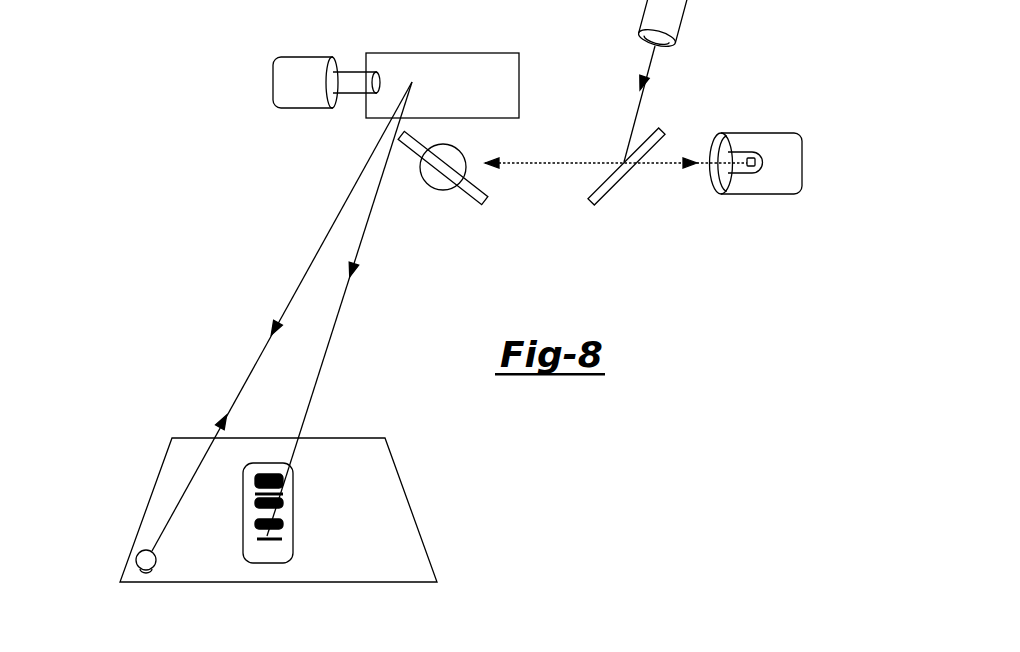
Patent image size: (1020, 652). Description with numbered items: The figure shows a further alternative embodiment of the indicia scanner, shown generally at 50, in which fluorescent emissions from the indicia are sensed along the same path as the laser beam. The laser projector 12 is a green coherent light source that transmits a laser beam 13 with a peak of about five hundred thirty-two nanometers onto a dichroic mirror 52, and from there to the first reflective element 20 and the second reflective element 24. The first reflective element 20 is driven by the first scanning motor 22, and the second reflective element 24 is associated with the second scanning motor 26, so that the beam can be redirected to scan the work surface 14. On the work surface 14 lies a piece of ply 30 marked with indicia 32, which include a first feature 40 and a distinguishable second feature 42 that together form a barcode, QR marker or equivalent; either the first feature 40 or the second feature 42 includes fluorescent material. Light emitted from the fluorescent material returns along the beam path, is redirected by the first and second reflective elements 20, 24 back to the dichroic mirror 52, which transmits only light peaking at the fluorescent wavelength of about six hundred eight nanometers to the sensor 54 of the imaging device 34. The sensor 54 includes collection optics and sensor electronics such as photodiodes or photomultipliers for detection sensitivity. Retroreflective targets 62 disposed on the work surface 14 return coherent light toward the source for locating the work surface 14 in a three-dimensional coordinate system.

The laser projector 12 is at (665, 25).
The laser beam 13 is at (545, 165).
The work surface 14 is at (347, 544).
The first reflective element 20 is at (452, 93).
The first scanning motor 22 is at (288, 108).
The second reflective element 24 is at (483, 203).
The second scanning motor 26 is at (430, 188).
The piece of ply 30 is at (266, 480).
The indicia 32 is at (268, 462).
The imaging device 34 is at (756, 130).
The first feature 40 is at (255, 523).
The second feature 42 is at (285, 532).
The alternative embodiment 50 is at (252, 50).
The dichroic mirror 52 is at (610, 203).
The sensor 54 is at (750, 157).
The retroreflective targets 62 is at (147, 575).